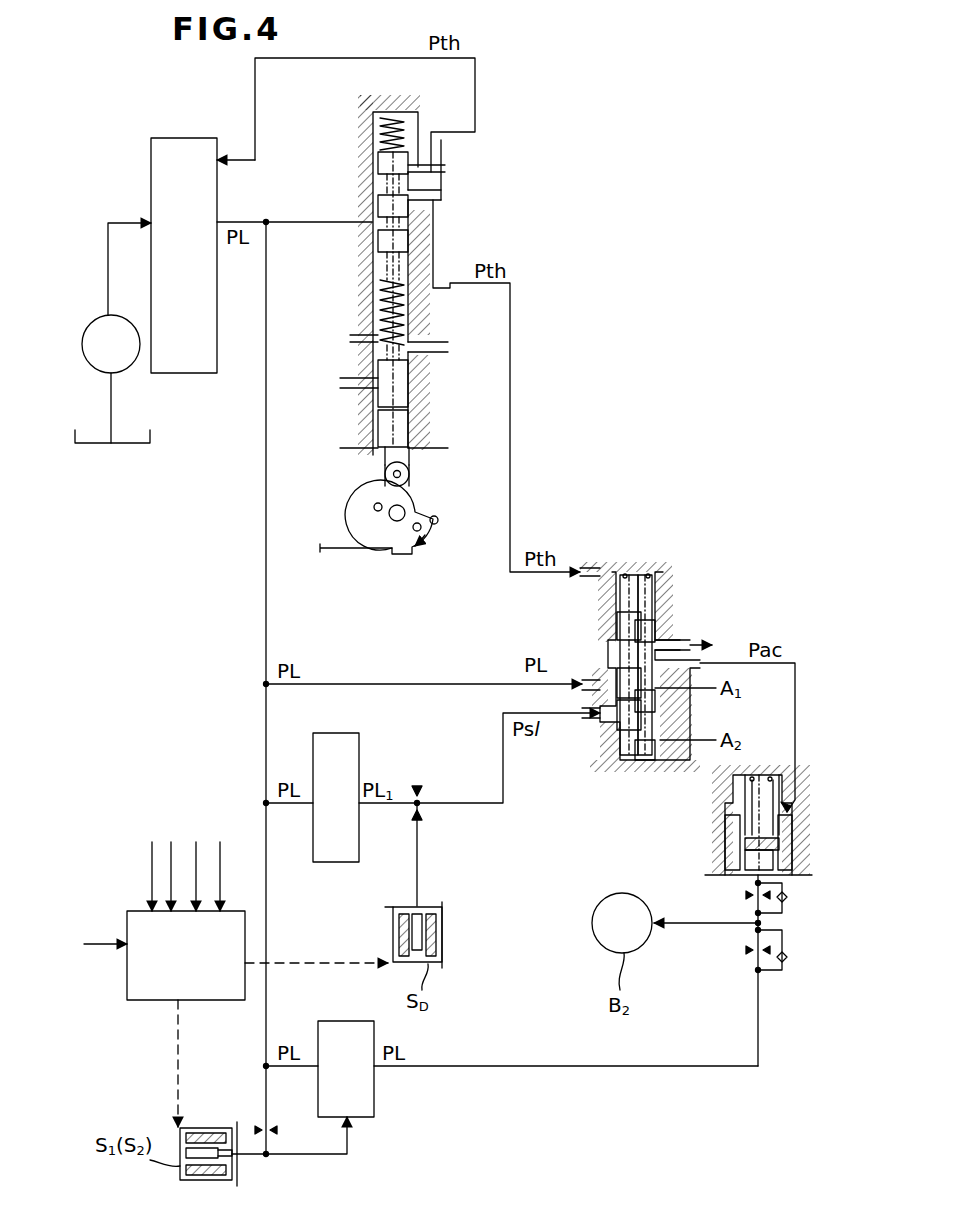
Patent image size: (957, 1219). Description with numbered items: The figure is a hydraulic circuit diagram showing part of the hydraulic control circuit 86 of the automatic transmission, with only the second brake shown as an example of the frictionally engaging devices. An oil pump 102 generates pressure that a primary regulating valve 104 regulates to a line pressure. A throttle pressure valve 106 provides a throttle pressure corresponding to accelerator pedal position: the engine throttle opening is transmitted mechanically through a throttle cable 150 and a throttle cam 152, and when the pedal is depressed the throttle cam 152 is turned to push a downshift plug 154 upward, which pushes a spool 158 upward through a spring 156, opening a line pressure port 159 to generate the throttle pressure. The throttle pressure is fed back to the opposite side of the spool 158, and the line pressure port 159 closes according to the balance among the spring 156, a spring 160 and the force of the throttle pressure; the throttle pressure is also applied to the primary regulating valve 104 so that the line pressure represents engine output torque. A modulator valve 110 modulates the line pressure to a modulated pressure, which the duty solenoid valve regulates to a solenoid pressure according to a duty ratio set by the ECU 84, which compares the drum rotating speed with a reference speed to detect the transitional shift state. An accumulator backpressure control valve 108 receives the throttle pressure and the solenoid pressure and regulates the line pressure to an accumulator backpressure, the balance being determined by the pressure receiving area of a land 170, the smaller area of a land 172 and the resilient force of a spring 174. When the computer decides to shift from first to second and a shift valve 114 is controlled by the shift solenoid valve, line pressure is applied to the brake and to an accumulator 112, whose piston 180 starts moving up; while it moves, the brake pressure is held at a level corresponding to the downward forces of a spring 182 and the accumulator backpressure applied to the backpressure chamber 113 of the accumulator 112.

The hydraulic control circuit 86 is at (584, 90).
The oil pump 102 is at (84, 332).
The primary regulating valve 104 is at (166, 147).
The throttle pressure valve 106 is at (478, 160).
The accumulator backpressure control valve 108 is at (636, 548).
The modulator valve 110 is at (338, 736).
The accumulator 112 is at (716, 796).
The backpressure chamber 113 is at (796, 878).
The shift valve 114 is at (376, 1106).
The throttle cable 150 is at (348, 550).
The throttle cam 152 is at (405, 552).
The downshift plug 154 is at (376, 430).
The spring 156 is at (372, 345).
The spool 158 is at (368, 242).
The line pressure port 159 is at (370, 218).
The spring 160 is at (372, 124).
The land 170 is at (612, 682).
The land 172 is at (622, 735).
The spring 174 is at (664, 580).
The piston 180 is at (728, 844).
The spring 182 is at (756, 778).
The ECU 84 is at (186, 1002).